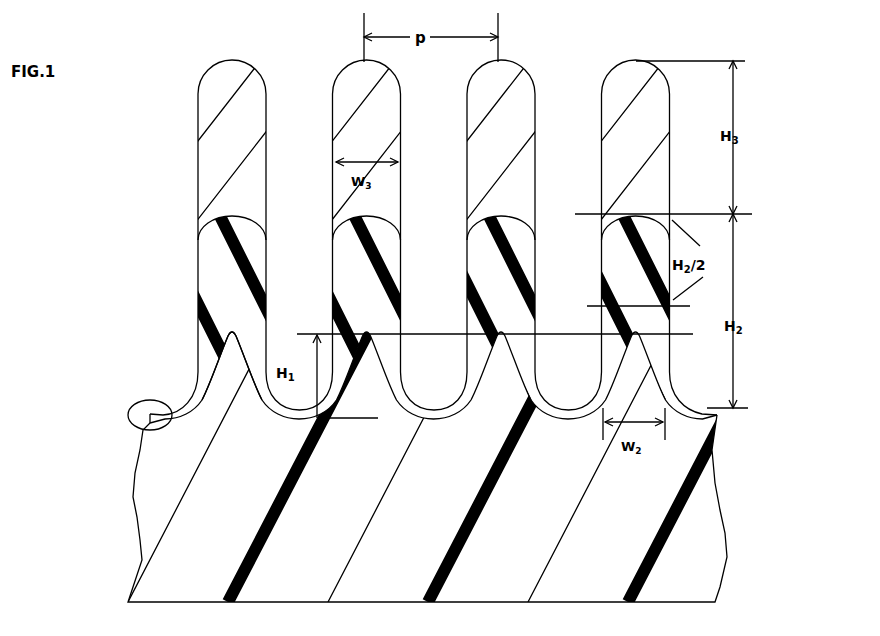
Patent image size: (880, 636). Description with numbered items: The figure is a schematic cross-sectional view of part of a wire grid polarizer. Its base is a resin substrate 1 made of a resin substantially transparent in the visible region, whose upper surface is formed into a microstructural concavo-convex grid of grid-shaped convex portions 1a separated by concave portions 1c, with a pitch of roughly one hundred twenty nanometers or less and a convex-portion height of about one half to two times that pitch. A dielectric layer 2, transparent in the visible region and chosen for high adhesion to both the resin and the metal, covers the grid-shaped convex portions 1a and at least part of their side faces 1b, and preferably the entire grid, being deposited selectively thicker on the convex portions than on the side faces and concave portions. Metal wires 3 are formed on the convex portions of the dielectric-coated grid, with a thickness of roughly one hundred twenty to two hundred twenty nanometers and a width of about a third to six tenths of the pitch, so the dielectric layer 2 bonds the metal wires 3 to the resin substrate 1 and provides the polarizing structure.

The resin substrate 1 is at (705, 541).
The grid-shaped convex portions 1a is at (505, 373).
The side faces 1b is at (200, 390).
The concave portions 1c is at (143, 430).
The dielectric layer 2 is at (658, 340).
The metal wires 3 is at (650, 110).